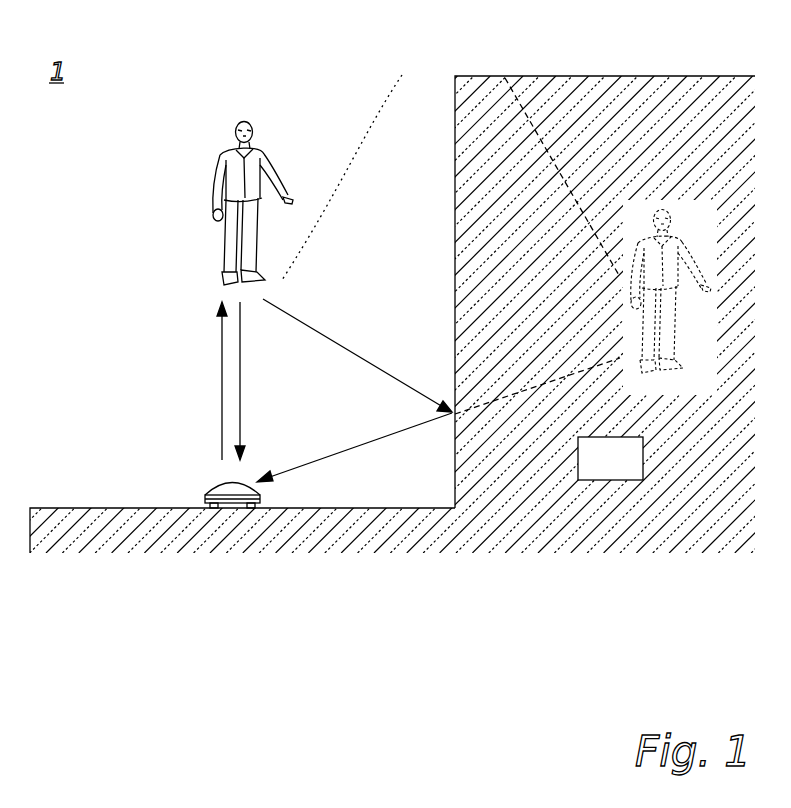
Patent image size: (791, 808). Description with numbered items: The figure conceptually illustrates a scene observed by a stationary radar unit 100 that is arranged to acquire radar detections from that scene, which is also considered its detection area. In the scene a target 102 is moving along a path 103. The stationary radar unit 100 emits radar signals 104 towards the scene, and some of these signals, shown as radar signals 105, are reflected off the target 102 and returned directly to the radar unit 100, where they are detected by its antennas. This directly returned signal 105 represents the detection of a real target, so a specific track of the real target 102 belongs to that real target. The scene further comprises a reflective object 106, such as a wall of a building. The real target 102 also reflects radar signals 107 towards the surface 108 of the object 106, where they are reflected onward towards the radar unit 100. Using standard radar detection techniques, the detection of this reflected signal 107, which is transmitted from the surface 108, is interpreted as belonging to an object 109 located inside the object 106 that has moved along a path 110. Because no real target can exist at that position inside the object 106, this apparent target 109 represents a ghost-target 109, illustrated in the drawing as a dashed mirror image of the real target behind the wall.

The stationary radar unit 100 is at (187, 503).
The target 102 is at (228, 103).
The path 103 is at (368, 122).
The radar signals 104 is at (220, 423).
The reflected radar signals 105 is at (240, 357).
The reflective object 106 is at (633, 474).
The reflected radar signals 107 is at (340, 345).
The surface 108 is at (455, 468).
The ghost-target 109 is at (650, 400).
The path 110 is at (530, 122).